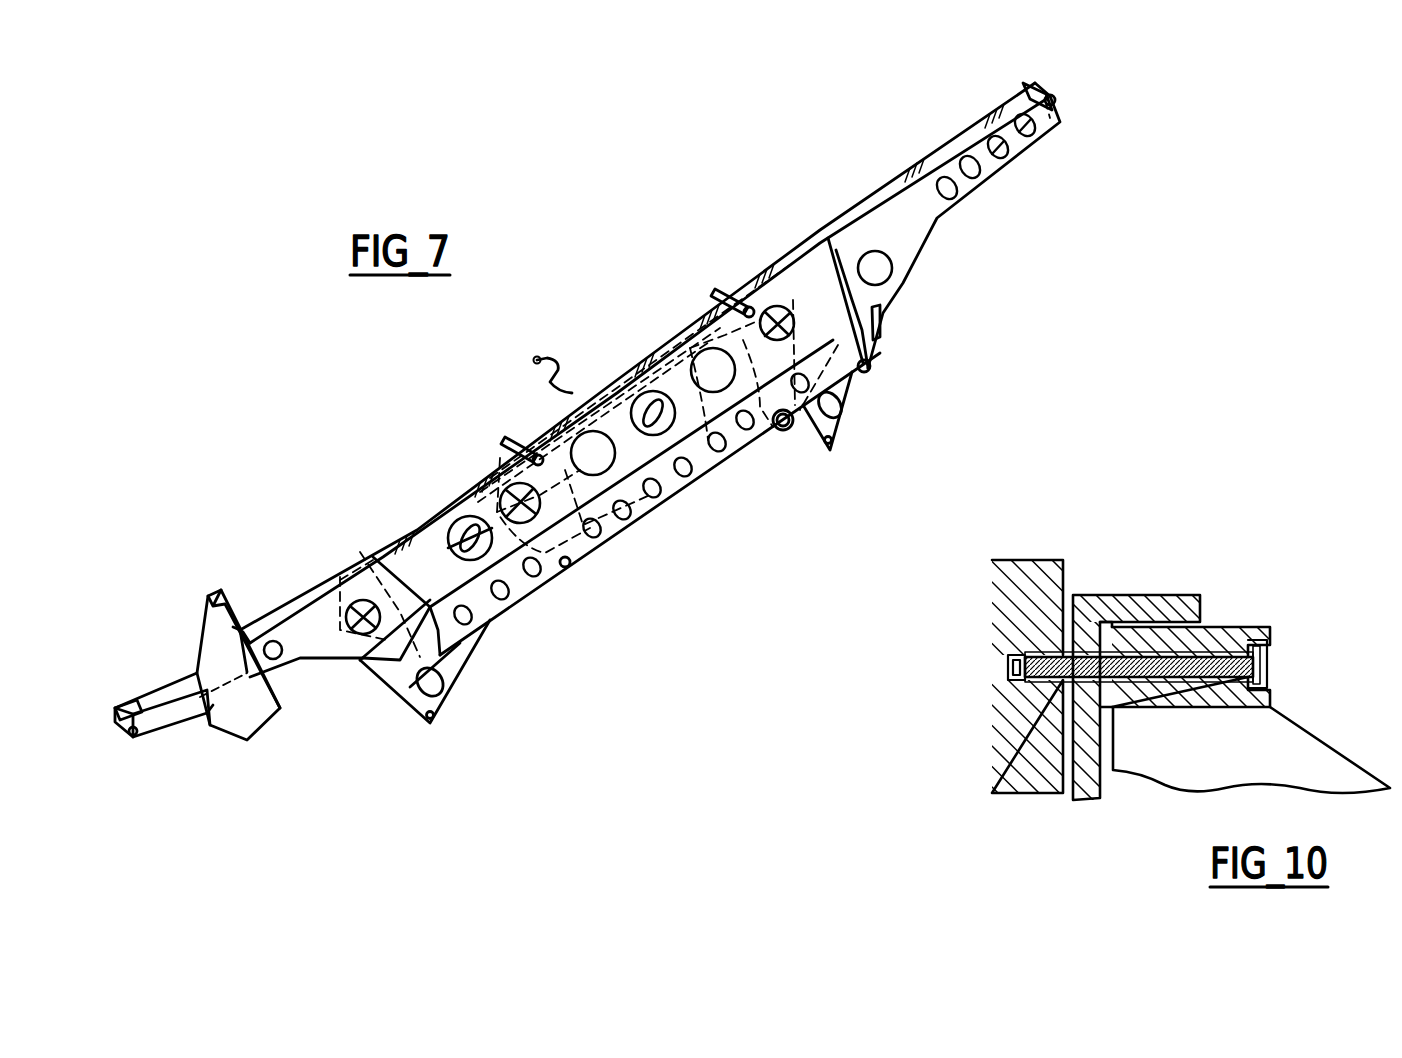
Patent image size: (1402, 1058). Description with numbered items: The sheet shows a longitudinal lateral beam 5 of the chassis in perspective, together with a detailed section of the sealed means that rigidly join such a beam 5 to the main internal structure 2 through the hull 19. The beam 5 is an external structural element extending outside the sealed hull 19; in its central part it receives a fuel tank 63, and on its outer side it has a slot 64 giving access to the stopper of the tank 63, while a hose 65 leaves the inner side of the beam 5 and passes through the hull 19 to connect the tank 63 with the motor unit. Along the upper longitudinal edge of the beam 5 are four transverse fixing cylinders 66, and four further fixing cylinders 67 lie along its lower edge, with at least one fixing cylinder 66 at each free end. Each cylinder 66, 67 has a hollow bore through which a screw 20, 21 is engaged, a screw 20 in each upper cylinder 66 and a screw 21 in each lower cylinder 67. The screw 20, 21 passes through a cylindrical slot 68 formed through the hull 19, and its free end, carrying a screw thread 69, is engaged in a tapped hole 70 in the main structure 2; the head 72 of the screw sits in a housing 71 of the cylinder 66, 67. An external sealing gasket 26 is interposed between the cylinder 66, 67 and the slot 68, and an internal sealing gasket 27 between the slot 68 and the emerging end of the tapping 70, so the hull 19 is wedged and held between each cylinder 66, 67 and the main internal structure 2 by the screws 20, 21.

In FIG. 7, the longitudinal lateral beam 5 is at (258, 426).
In FIG. 10, the longitudinal lateral beam 5 is at (1320, 758).
In FIG. 7, the fuel tank 63 is at (618, 540).
In FIG. 7, the slot 64 is at (667, 421).
In FIG. 7, the hose 65 is at (560, 380).
In FIG. 7, the fixing cylinder 66 is at (125, 708).
In FIG. 10, the fixing cylinder 66 is at (1144, 672).
In FIG. 10, the fixing cylinder 67 is at (1170, 637).
In FIG. 10, the main internal structure 2 is at (1008, 605).
In FIG. 10, the internal sealing gasket 27 is at (1043, 640).
In FIG. 10, the sealed hull 19 is at (1157, 600).
In FIG. 10, the screw 20 is at (1213, 650).
In FIG. 10, the screw 21 is at (1198, 667).
In FIG. 10, the external sealing gasket 26 is at (1135, 712).
In FIG. 10, the cylindrical slot 68 is at (1075, 715).
In FIG. 10, the screw thread 69 is at (1018, 715).
In FIG. 10, the tapped hole 70 is at (1023, 682).
In FIG. 10, the housing 71 is at (1268, 644).
In FIG. 10, the head 72 is at (1268, 666).